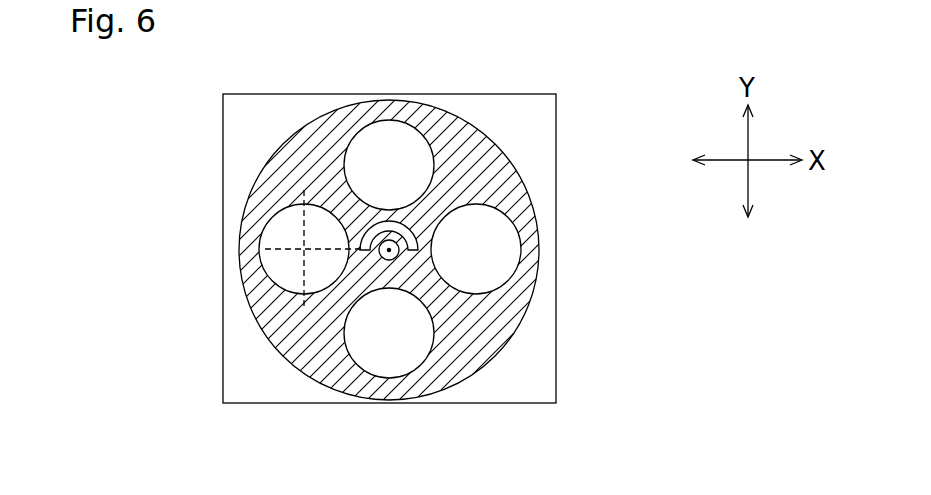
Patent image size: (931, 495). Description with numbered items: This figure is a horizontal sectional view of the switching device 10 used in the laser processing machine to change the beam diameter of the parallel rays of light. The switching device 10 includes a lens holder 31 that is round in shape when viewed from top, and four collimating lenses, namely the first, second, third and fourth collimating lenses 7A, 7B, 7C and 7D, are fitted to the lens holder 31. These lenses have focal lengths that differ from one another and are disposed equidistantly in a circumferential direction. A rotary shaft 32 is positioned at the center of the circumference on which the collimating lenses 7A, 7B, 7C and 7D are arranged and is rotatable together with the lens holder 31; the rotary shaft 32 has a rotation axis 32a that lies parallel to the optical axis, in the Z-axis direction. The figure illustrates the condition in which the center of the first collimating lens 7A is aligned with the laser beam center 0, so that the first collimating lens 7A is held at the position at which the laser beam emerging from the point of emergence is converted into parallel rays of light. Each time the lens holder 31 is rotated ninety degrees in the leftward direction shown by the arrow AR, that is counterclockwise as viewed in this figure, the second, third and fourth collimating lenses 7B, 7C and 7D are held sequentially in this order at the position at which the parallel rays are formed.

The switching device 10 is at (212, 98).
The lens holder 31 is at (483, 150).
The first collimating lens 7A is at (273, 228).
The second collimating lens 7B is at (385, 130).
The third collimating lens 7C is at (502, 243).
The fourth collimating lens 7D is at (412, 355).
The center of the laser beam 0 is at (302, 250).
The rotary shaft 32 is at (400, 257).
The rotation axis 32a is at (389, 250).
The arrow AR is at (418, 220).